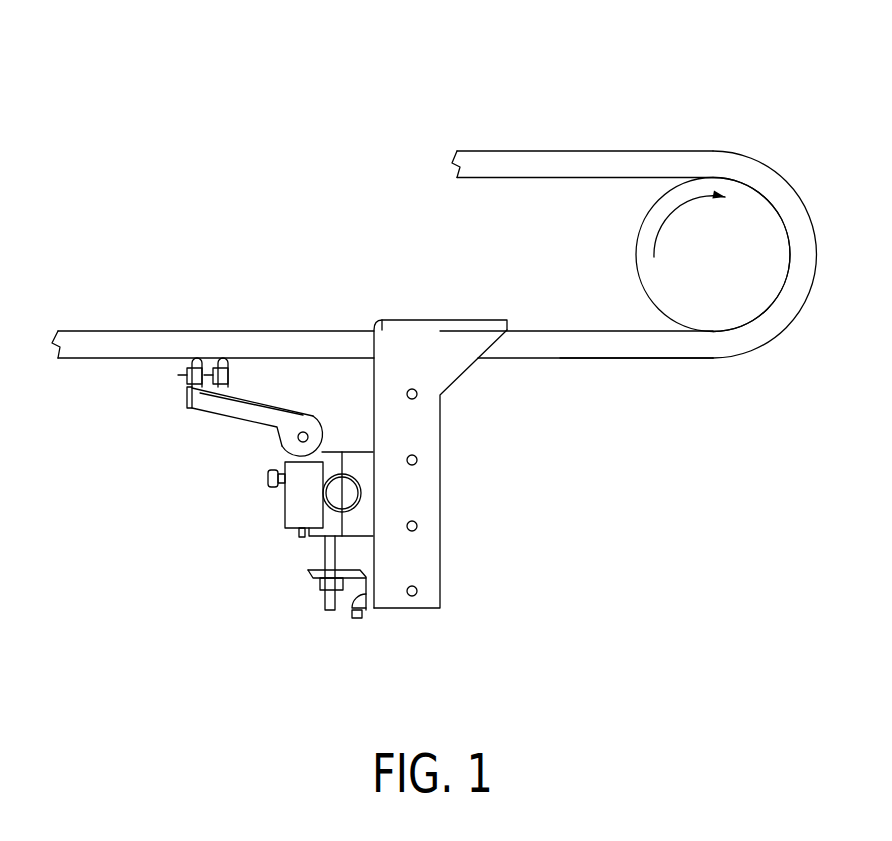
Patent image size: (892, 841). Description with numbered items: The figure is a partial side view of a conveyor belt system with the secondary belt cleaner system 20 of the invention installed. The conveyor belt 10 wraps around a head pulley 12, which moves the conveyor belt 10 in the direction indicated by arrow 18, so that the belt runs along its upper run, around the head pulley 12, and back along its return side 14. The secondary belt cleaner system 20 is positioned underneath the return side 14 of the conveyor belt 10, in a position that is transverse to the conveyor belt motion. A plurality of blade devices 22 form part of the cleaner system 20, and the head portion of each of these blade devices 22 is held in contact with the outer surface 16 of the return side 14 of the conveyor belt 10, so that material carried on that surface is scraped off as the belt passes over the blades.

The conveyor belt 10 is at (557, 140).
The head pulley 12 is at (749, 233).
The return side 14 is at (738, 380).
The outer surface 16 is at (653, 358).
The arrow 18 is at (671, 212).
The secondary belt cleaner system 20 is at (468, 586).
The blade devices 22 is at (156, 384).